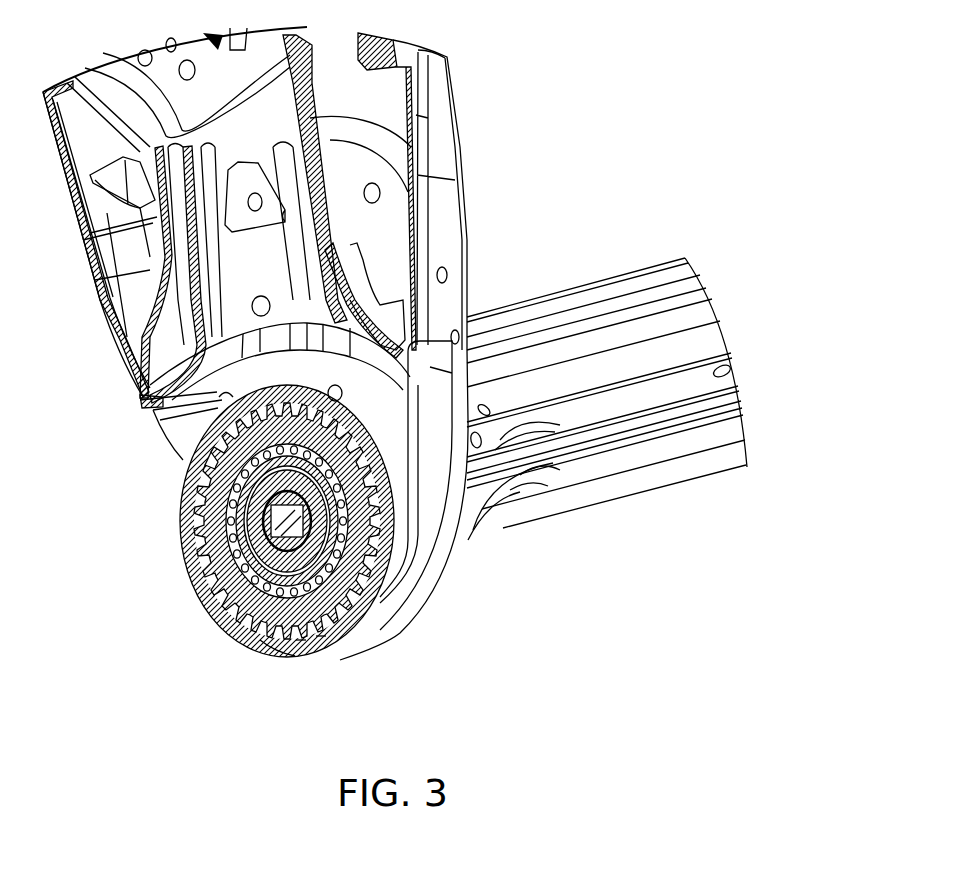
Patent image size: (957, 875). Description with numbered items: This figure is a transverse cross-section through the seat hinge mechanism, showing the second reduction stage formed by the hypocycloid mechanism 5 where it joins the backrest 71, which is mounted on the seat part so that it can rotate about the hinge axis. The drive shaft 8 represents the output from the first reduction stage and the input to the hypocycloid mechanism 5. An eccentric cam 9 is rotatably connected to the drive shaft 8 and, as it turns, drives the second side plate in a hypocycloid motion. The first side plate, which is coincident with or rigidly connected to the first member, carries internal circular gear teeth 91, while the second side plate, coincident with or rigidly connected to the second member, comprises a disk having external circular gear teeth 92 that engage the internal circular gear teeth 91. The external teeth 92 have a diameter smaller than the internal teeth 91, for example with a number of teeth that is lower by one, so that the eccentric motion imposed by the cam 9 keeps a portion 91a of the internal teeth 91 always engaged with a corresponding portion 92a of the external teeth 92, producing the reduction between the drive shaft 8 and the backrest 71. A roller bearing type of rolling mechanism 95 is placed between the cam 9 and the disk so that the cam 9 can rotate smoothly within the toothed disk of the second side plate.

The backrest 71 is at (482, 120).
The drive shaft 8 is at (727, 413).
The hypocycloid mechanism 5 is at (366, 662).
The eccentric cam 9 is at (210, 505).
The internal circular gear teeth 91 is at (321, 637).
The external circular gear teeth 92 is at (300, 637).
The portion of the internal teeth 91a is at (220, 393).
The portion of the external teeth 92a is at (217, 455).
The rolling mechanism 95 is at (245, 573).